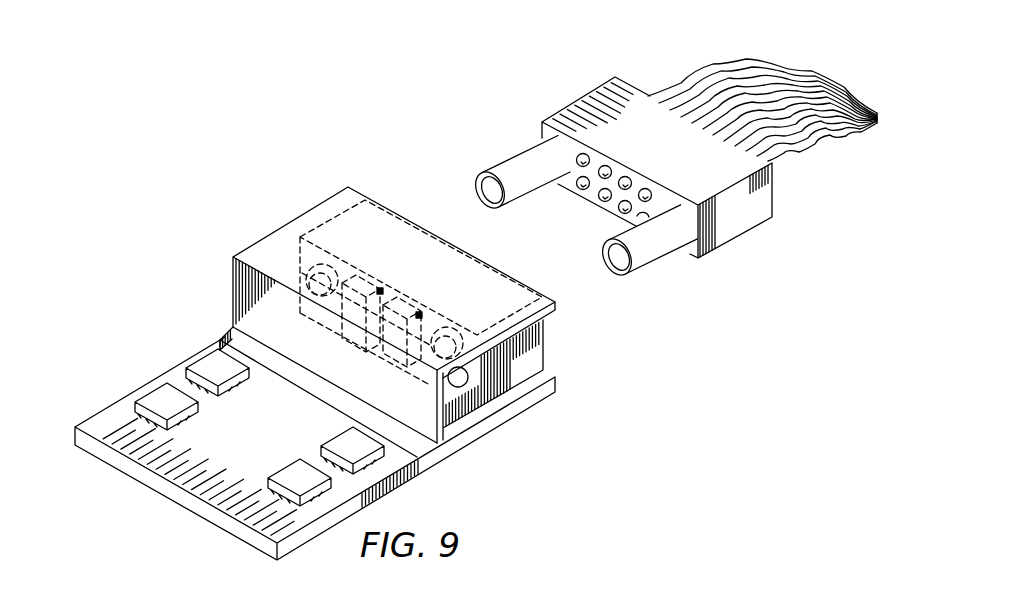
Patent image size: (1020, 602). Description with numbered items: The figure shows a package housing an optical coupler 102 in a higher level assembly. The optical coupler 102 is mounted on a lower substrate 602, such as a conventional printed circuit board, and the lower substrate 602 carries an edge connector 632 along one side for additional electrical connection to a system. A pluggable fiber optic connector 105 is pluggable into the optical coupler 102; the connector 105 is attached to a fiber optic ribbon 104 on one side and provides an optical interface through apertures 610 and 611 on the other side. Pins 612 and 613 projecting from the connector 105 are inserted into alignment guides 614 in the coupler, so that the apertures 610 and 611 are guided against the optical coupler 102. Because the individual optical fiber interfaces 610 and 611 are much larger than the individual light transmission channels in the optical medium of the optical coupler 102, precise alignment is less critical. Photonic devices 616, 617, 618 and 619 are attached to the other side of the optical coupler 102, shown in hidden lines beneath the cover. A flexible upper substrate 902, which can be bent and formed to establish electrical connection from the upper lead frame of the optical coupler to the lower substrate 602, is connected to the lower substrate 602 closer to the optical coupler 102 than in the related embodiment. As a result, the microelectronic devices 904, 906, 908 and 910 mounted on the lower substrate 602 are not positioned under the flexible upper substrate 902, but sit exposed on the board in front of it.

The optical coupler 102 is at (530, 362).
The fiber optic ribbon 104 is at (747, 73).
The pluggable fiber optic connector 105 is at (612, 92).
The lower substrate 602 is at (163, 485).
The edge connector 632 is at (110, 434).
The aperture 610 is at (603, 199).
The aperture 611 is at (627, 178).
The pin 612 is at (517, 157).
The pin 613 is at (614, 280).
The alignment guide 614 is at (300, 276).
The photonic device 616 is at (342, 340).
The photonic device 617 is at (377, 272).
The photonic device 618 is at (396, 358).
The photonic device 619 is at (415, 300).
The flexible upper substrate 902 is at (317, 210).
The microelectronic device 904 is at (157, 395).
The microelectronic device 906 is at (207, 353).
The microelectronic device 908 is at (297, 470).
The microelectronic device 910 is at (343, 436).